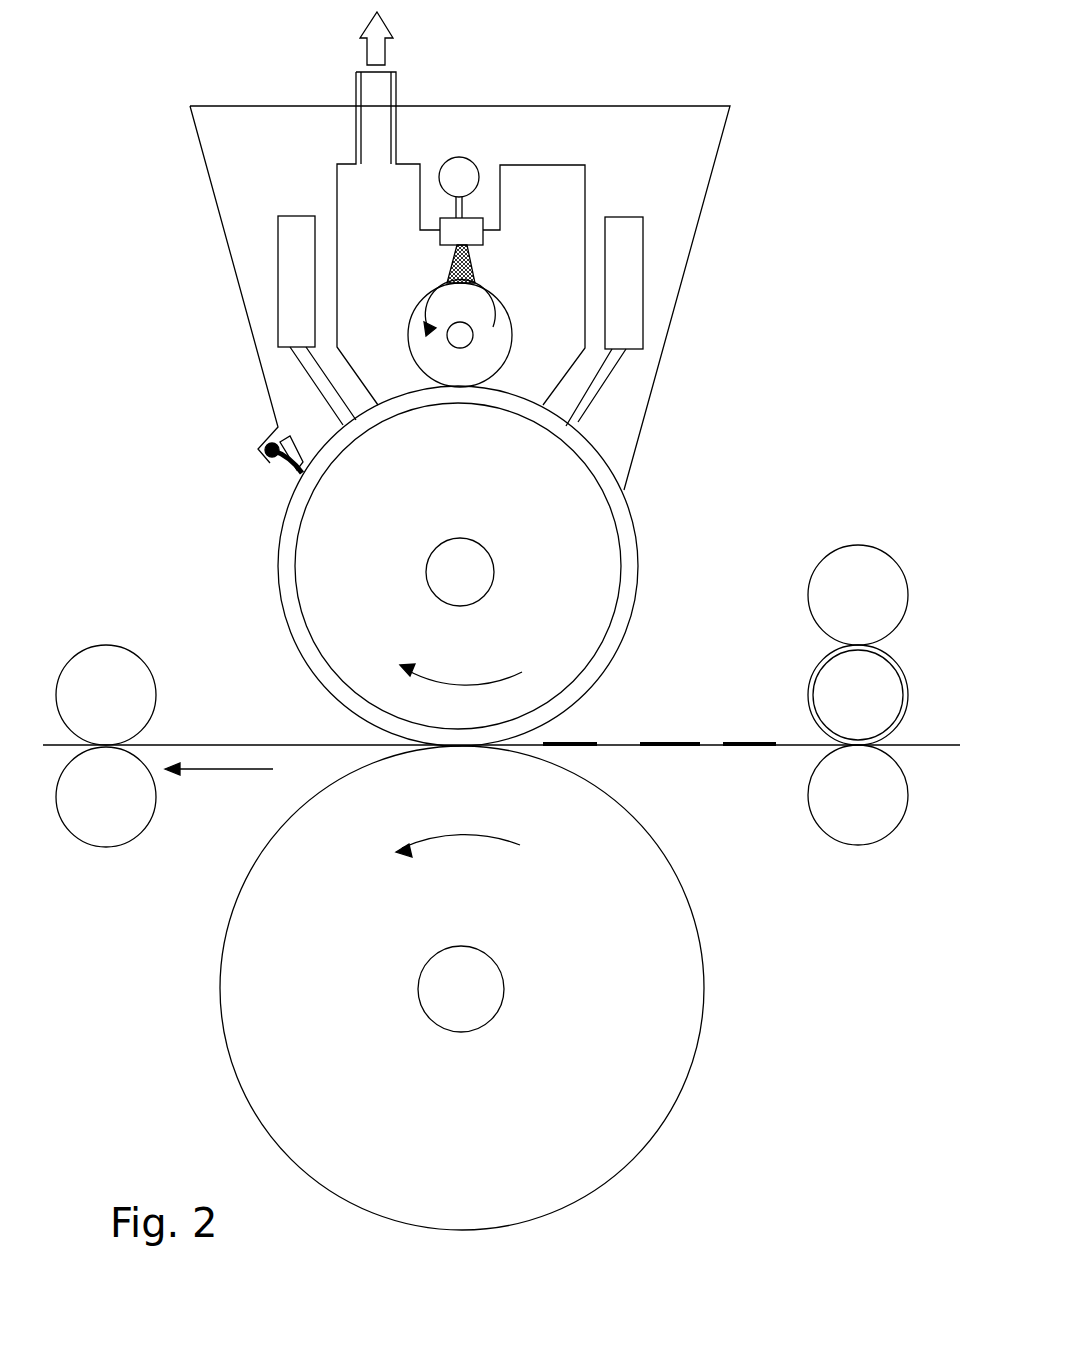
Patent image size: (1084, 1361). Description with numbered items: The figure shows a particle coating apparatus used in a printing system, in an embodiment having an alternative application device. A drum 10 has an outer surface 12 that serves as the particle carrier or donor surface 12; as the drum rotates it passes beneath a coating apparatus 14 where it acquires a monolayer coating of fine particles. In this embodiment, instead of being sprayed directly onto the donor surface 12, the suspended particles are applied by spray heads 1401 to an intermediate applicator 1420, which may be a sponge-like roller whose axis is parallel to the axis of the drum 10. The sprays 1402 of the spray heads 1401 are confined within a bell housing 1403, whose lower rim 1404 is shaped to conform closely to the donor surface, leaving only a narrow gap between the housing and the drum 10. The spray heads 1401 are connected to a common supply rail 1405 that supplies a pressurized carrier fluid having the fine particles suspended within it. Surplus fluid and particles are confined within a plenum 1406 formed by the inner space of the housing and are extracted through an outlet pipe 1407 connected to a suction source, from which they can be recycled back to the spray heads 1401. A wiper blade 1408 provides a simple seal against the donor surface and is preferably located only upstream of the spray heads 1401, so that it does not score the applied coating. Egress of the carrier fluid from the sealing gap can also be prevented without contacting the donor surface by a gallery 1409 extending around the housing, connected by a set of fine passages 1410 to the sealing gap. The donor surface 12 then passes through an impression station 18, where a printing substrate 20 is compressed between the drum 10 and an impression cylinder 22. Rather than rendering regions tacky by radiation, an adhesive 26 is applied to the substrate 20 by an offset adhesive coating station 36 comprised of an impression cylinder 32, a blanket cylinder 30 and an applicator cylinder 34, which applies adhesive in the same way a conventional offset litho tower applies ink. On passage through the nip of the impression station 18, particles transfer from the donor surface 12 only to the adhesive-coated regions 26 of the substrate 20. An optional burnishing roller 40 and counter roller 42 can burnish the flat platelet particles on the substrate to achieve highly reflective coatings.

The drum 10 is at (312, 562).
The outer surface (donor surface) 12 is at (640, 549).
The coating apparatus 14 is at (665, 85).
The impression station 18 is at (355, 735).
The printing substrate 20 is at (628, 748).
The impression cylinder 22 is at (659, 1028).
The adhesive 26 is at (578, 742).
The blanket cylinder 30 is at (820, 680).
The impression cylinder 32 is at (820, 799).
The applicator cylinder 34 is at (829, 597).
The offset adhesive coating station 36 is at (875, 529).
The burnishing roller 40 is at (118, 668).
The counter roller 42 is at (112, 817).
The spray head 1401 is at (487, 230).
The spray 1402 is at (478, 268).
The bell housing 1403 is at (528, 120).
The lower rim 1404 is at (327, 430).
The common supply rail 1405 is at (453, 160).
The plenum 1406 is at (370, 212).
The outlet pipe 1407 is at (356, 90).
The wiper blade 1408 is at (272, 458).
The gallery 1409 is at (295, 253).
The fine passages 1410 is at (318, 387).
The intermediate applicator 1420 is at (493, 322).